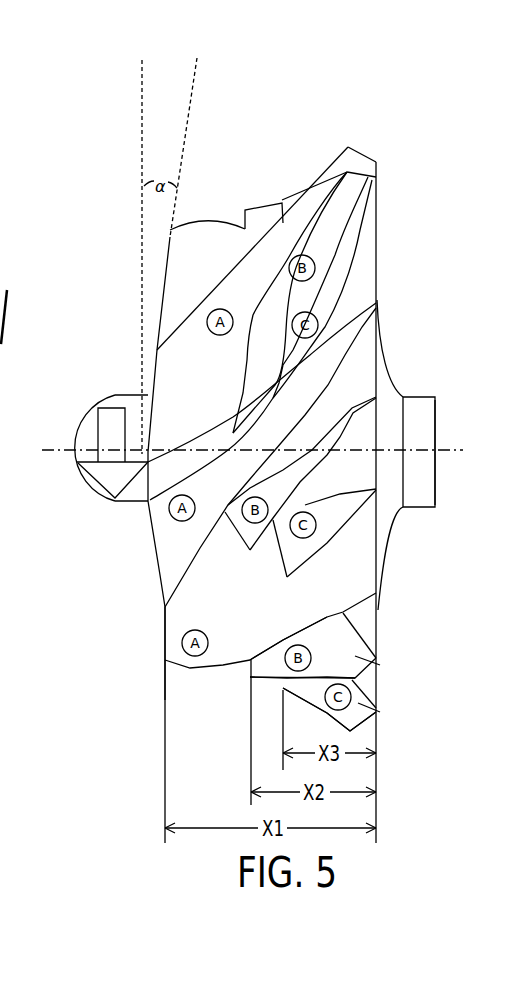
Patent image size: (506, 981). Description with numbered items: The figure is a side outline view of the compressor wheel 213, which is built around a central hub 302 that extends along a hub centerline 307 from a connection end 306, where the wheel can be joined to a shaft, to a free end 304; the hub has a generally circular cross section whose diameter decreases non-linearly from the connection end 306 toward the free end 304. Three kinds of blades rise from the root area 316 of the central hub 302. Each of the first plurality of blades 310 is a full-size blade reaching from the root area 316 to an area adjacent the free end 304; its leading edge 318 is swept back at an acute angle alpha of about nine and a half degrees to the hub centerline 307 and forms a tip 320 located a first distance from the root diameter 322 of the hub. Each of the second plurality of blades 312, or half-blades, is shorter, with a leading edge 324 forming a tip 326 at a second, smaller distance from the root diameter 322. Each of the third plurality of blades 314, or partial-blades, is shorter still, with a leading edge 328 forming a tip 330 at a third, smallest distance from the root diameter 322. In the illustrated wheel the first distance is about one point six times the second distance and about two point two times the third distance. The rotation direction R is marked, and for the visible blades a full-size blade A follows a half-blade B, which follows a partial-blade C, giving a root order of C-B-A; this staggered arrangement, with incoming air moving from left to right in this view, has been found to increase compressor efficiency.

The compressor wheel 213 is at (298, 128).
The central hub 302 is at (383, 388).
The free end 304 is at (92, 492).
The connection end 306 is at (434, 440).
The hub centerline 307 is at (457, 454).
The first plurality of blades 310 is at (292, 230).
The second plurality of blades 312 is at (288, 293).
The third plurality of blades 314 is at (323, 305).
The root area 316 is at (376, 182).
The leading edge 318 is at (162, 641).
The tip 320 is at (165, 660).
The root diameter 322 is at (437, 398).
The leading edge 324 is at (250, 662).
The tip 326 is at (250, 680).
The leading edge 328 is at (283, 687).
The tip 330 is at (283, 690).